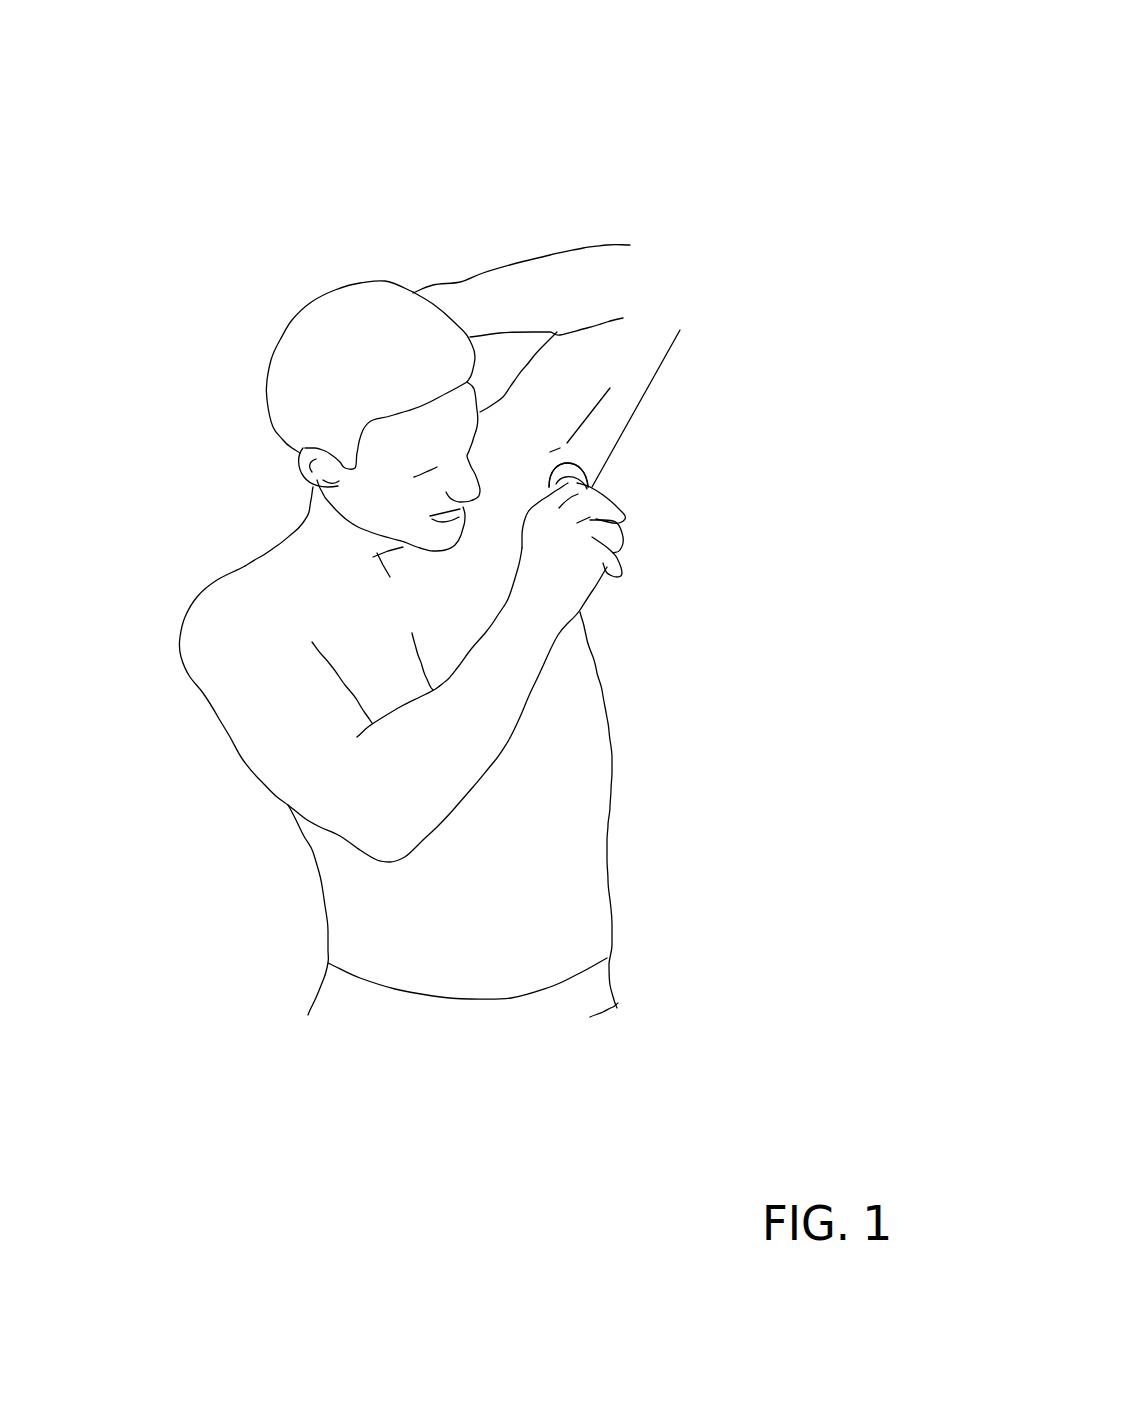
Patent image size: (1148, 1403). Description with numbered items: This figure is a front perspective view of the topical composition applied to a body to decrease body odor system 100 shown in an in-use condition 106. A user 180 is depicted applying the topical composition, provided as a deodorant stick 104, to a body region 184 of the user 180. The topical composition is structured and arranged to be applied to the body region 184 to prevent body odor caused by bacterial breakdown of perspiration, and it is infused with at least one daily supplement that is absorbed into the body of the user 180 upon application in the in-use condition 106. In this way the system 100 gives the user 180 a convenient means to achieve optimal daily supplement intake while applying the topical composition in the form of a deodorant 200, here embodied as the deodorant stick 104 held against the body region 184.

The topical composition applied to a body to decrease body odor system 100 is at (738, 107).
The deodorant stick 104 is at (562, 460).
The in-use condition 106 is at (398, 220).
The user 180 is at (243, 568).
The body region 184 is at (580, 755).
The deodorant 200 is at (588, 480).